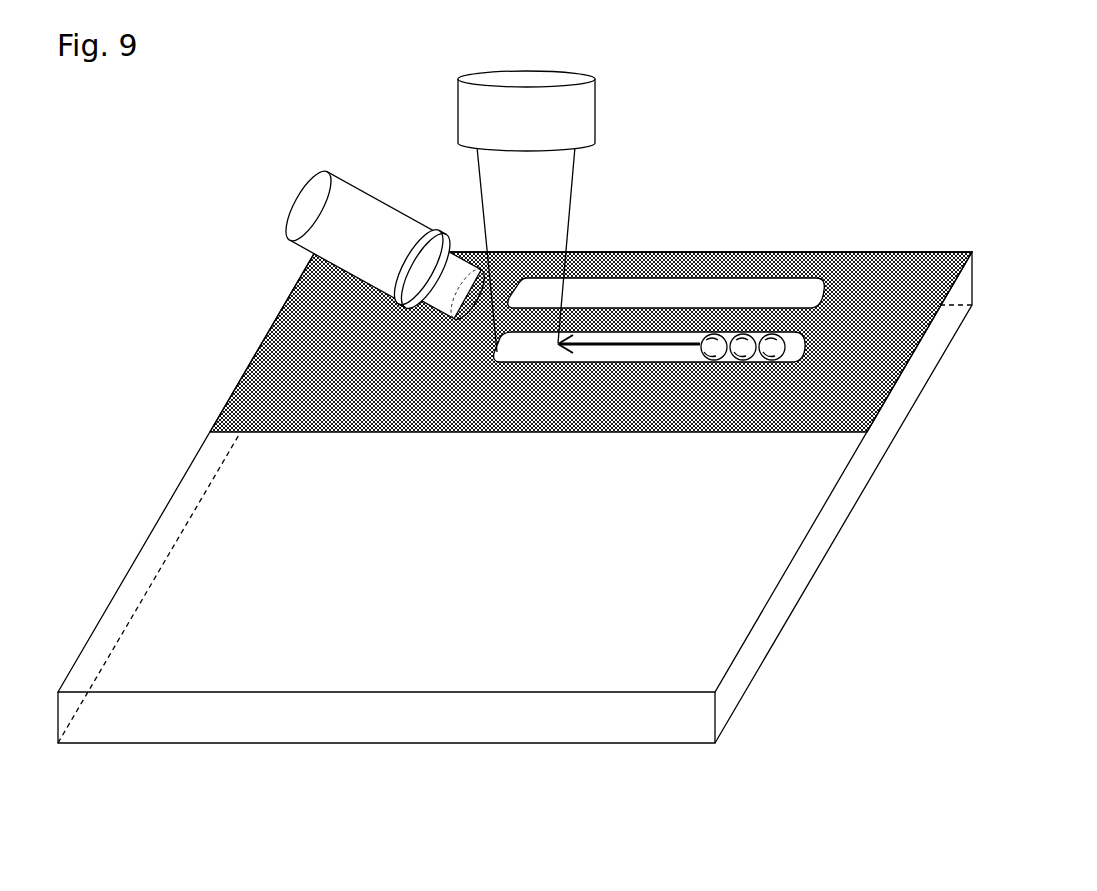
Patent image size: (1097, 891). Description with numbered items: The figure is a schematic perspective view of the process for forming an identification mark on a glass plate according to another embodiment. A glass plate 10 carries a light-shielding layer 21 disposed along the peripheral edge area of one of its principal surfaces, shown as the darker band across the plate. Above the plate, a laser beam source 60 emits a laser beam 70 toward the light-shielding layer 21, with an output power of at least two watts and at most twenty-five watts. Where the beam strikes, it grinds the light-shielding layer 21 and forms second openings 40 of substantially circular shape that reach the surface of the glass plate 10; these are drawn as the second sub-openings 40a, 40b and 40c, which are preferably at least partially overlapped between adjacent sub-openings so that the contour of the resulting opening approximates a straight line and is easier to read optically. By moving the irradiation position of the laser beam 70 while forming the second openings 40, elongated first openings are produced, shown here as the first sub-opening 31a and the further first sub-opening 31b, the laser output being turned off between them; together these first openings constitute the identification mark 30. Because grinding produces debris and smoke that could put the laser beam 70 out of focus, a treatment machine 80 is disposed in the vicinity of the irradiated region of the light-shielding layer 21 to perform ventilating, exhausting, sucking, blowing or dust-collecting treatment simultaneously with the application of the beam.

The glass plate 10 is at (243, 485).
The light-shielding layer 21 is at (822, 264).
The identification mark 30 is at (659, 270).
The first sub-opening 31a is at (632, 335).
The first sub-opening 31b is at (618, 298).
The second openings 40 is at (701, 410).
The second sub-opening 40a is at (785, 353).
The second sub-opening 40b is at (738, 353).
The second sub-opening 40c is at (710, 353).
The laser beam source 60 is at (578, 117).
The laser beam 70 is at (548, 213).
The treatment machine 80 is at (328, 242).